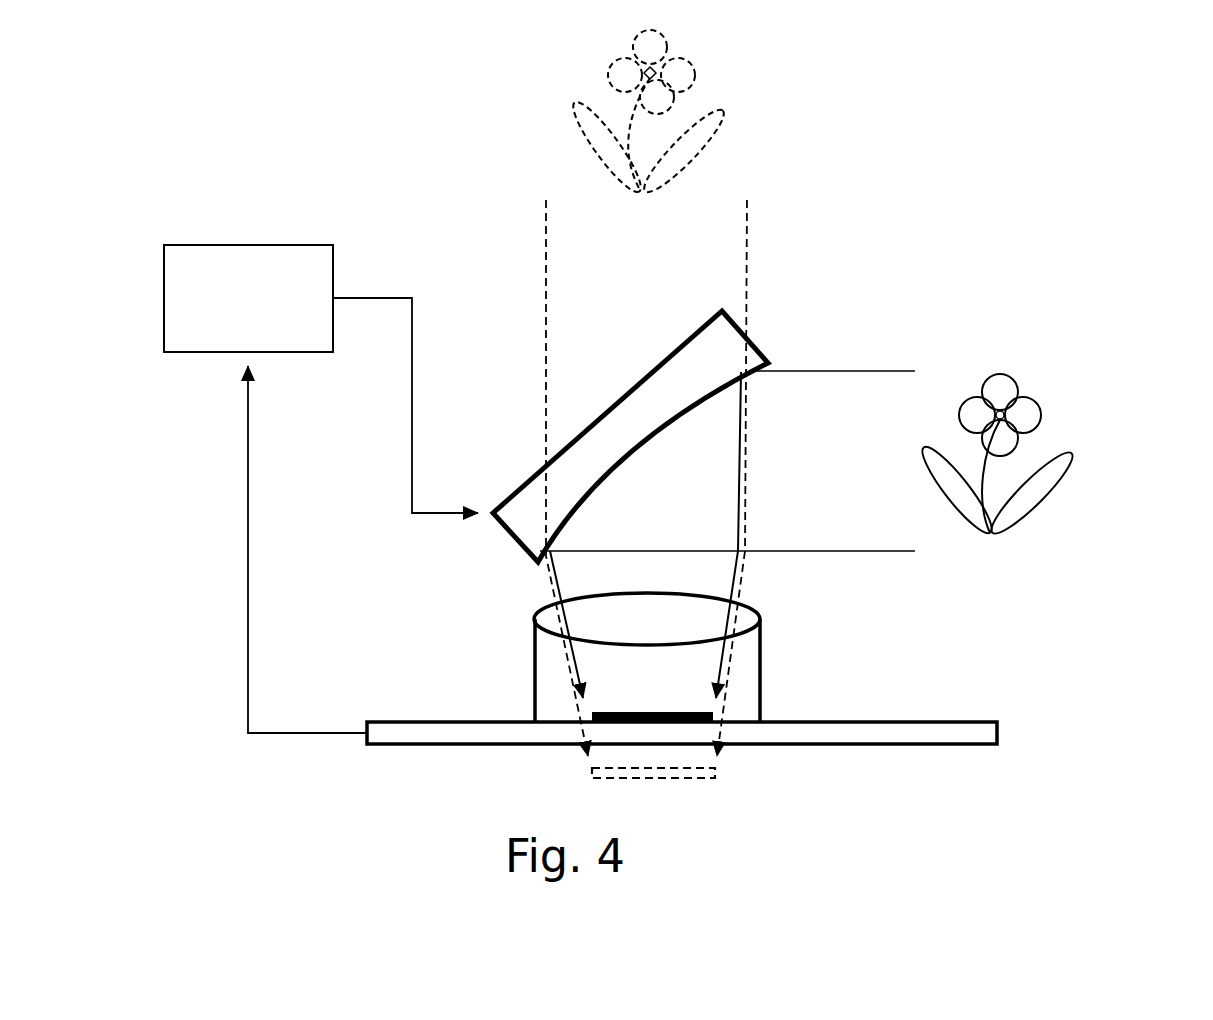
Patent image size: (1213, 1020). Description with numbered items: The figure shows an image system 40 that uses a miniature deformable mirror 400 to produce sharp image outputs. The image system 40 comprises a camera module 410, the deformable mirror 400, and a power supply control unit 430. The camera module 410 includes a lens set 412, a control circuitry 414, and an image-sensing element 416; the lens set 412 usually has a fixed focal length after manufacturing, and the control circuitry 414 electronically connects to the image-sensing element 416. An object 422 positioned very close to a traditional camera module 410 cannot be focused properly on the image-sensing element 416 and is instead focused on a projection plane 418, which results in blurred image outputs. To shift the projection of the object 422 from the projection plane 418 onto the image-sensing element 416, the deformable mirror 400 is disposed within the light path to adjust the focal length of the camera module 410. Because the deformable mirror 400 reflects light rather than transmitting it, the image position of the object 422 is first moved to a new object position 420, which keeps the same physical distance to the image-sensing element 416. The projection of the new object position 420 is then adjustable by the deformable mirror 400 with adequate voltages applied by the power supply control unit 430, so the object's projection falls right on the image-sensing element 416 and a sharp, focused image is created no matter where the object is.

The image system 40 is at (386, 138).
The miniature deformable mirror 400 is at (690, 383).
The camera module 410 is at (662, 652).
The lens set 412 is at (590, 618).
The control circuitry 414 is at (962, 733).
The image-sensing element 416 is at (703, 727).
The projection plane 418 is at (693, 775).
The new object position 420 is at (1028, 412).
The object 422 is at (693, 63).
The power supply control unit 430 is at (255, 257).